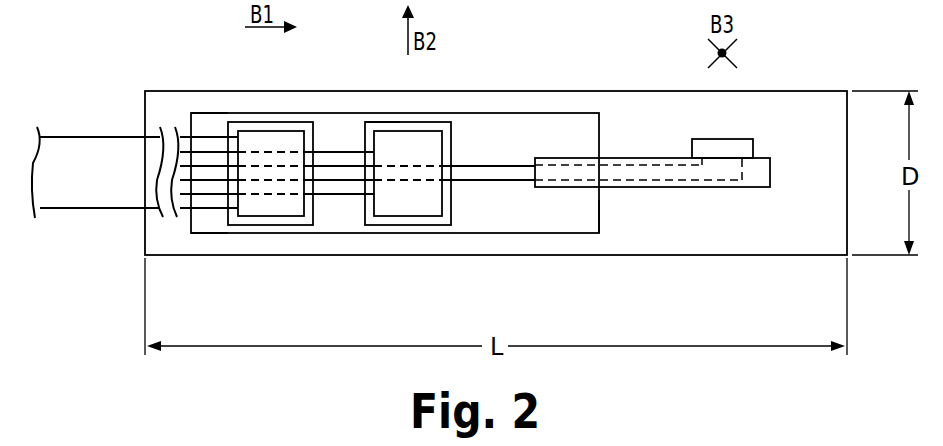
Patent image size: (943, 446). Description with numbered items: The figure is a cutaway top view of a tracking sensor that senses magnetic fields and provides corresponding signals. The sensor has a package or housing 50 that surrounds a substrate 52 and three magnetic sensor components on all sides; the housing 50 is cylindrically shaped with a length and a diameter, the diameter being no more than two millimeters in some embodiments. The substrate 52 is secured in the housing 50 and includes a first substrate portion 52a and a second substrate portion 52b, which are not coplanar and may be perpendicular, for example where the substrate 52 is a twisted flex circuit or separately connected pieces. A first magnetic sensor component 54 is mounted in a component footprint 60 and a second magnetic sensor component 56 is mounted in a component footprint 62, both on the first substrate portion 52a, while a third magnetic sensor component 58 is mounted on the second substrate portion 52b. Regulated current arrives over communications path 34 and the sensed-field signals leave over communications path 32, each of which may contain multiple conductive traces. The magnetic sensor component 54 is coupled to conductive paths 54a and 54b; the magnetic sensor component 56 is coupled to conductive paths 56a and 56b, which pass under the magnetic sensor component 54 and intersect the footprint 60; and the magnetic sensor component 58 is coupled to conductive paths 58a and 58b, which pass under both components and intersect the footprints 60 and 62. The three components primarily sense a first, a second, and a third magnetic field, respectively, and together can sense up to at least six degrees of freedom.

The communications path 32 is at (57, 208).
The communications path 34 is at (58, 137).
The housing 50 is at (167, 91).
The substrate 52 is at (616, 193).
The first substrate portion 52a is at (567, 219).
The second substrate portion 52b is at (758, 178).
The magnetic sensor component 54 is at (260, 205).
The conductive path 54a is at (213, 135).
The conductive path 54b is at (215, 210).
The magnetic sensor component 56 is at (408, 205).
The conductive path 56a is at (288, 150).
The conductive path 56b is at (339, 91).
The magnetic sensor component 58 is at (727, 139).
The conductive path 58a is at (483, 163).
The conductive path 58b is at (483, 182).
The component footprint 60 is at (264, 113).
The component footprint 62 is at (382, 122).